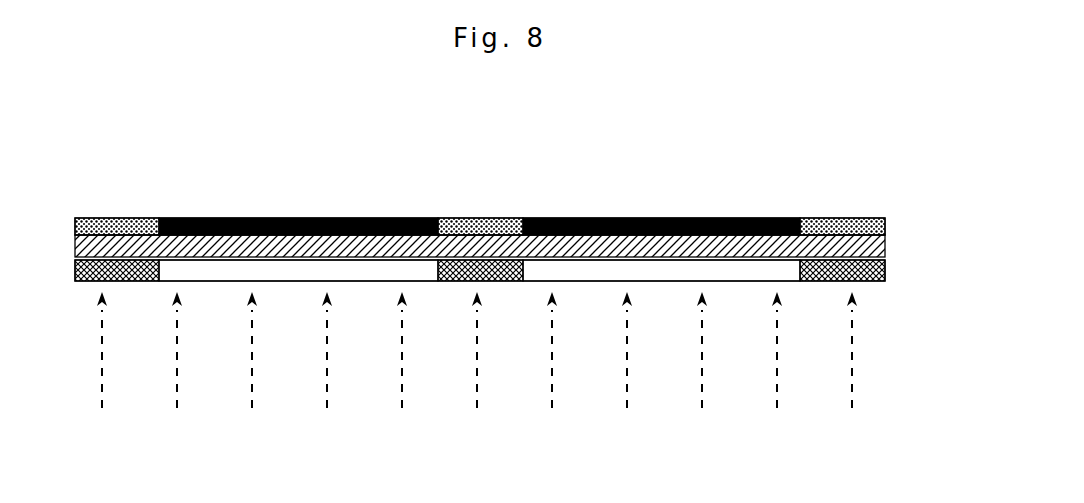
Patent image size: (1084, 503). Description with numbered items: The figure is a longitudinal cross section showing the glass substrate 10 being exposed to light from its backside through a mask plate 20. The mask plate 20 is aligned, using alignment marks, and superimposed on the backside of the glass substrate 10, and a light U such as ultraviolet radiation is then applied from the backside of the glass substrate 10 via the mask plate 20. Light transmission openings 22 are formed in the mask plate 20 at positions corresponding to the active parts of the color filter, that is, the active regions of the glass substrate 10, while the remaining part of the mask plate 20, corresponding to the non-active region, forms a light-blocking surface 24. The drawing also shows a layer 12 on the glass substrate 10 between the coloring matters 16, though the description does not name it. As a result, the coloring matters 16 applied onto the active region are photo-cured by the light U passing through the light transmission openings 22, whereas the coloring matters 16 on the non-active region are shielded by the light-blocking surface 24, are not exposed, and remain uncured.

The glass substrate 10 is at (885, 247).
The light shielding layer 12 is at (283, 217).
The coloring matters 16 is at (125, 217).
The mask plate 20 is at (300, 286).
The light transmission openings 22 is at (440, 267).
The light-blocking surface 24 is at (122, 281).
The light U is at (400, 352).